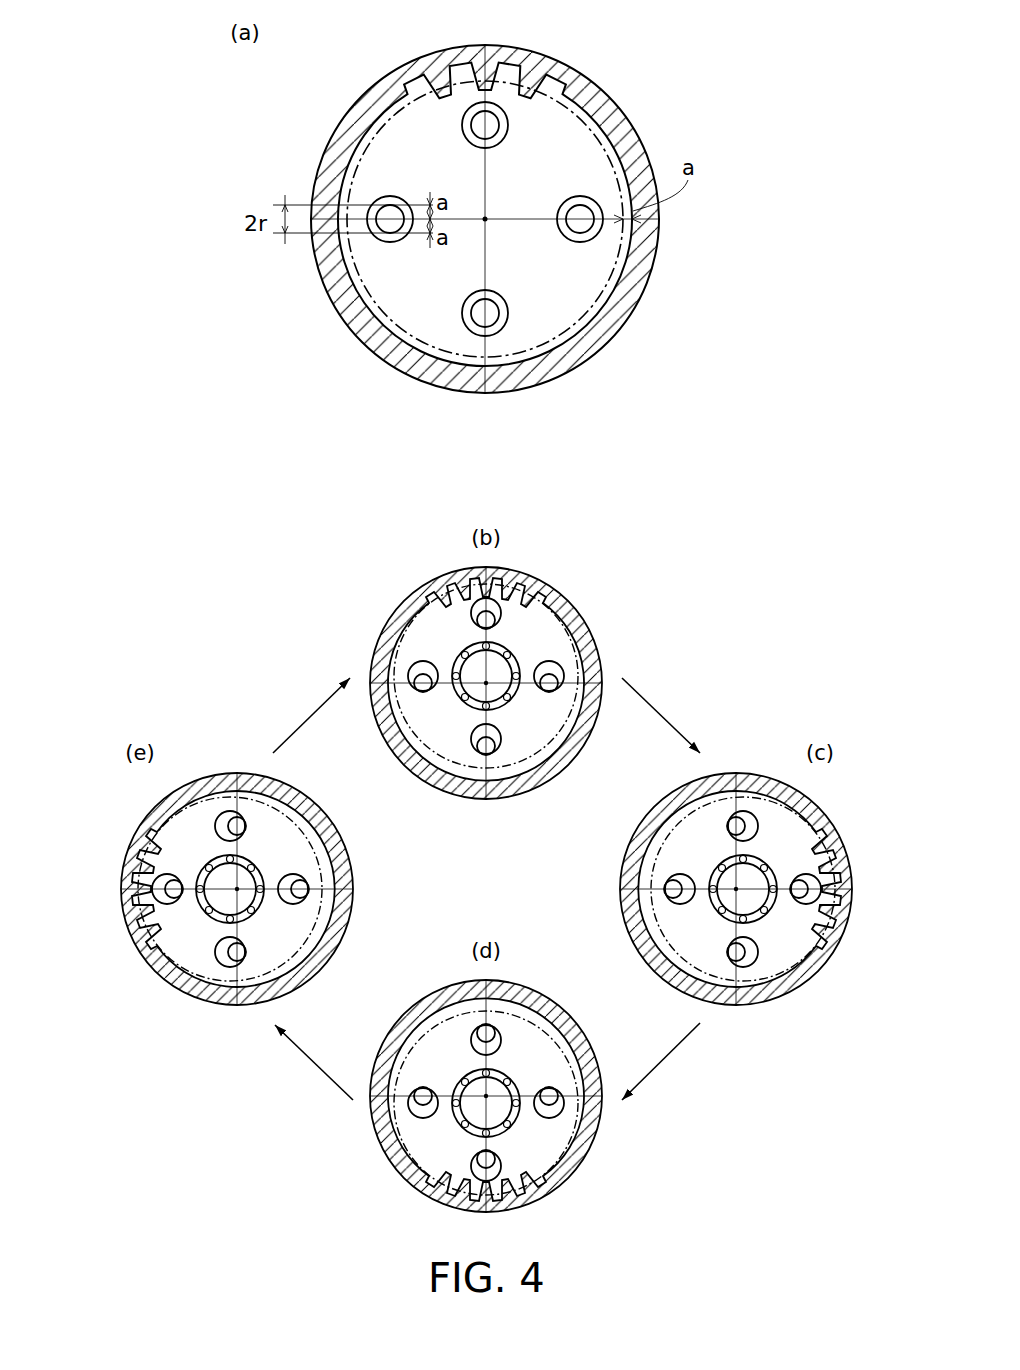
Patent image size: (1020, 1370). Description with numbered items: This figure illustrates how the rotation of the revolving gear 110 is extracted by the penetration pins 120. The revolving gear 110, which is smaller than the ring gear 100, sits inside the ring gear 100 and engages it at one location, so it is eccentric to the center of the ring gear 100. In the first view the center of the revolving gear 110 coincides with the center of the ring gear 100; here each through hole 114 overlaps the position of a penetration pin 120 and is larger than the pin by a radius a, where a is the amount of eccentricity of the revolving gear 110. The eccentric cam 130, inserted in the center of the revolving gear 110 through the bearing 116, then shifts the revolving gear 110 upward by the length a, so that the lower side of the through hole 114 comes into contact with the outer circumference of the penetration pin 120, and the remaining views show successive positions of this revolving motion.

The ring gear 100 is at (613, 118).
The revolving gear 110 is at (582, 278).
The through hole 114 is at (567, 331).
The bearing 116 is at (454, 661).
The penetration pin 120 is at (501, 330).
The eccentric cam 130 is at (470, 645).